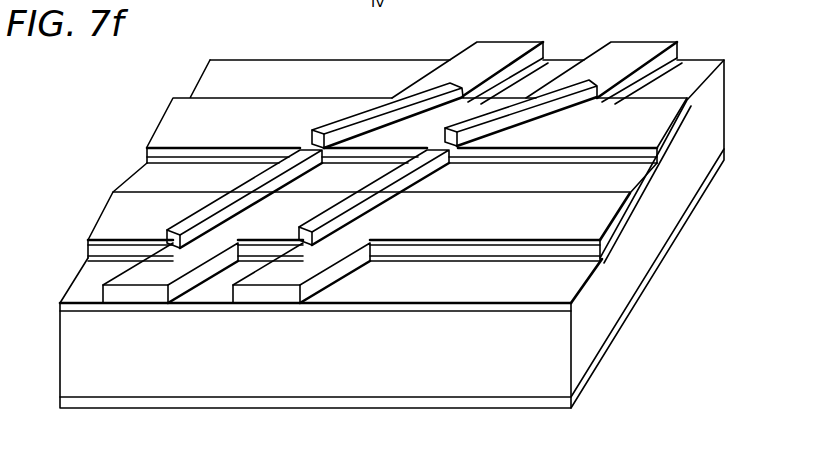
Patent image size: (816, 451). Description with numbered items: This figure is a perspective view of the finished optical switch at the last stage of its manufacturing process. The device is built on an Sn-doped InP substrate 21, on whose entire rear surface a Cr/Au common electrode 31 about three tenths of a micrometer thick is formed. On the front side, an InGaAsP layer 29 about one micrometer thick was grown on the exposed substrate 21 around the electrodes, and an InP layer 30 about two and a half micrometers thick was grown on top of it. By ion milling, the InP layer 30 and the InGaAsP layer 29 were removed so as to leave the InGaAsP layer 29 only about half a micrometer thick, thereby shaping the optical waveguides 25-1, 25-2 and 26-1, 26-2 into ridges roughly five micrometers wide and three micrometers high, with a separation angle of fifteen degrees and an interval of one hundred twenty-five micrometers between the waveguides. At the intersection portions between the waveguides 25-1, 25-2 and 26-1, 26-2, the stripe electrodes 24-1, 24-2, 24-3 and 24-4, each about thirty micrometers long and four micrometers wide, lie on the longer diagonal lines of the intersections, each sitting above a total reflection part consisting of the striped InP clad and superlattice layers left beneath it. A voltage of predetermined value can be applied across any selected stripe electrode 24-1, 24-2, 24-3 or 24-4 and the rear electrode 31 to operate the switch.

The substrate 21 is at (377, 390).
The common electrode 31 is at (435, 403).
The InGaAsP layer 29 is at (260, 305).
The InP layer 30 is at (138, 310).
The optical waveguide 25-1 is at (99, 221).
The optical waveguide 25-2 is at (150, 136).
The stripe electrode 24-1 is at (234, 206).
The stripe electrode 24-2 is at (400, 210).
The stripe electrode 24-3 is at (352, 115).
The stripe electrode 24-4 is at (538, 113).
The optical waveguide 26-1 is at (519, 42).
The optical waveguide 26-2 is at (636, 42).